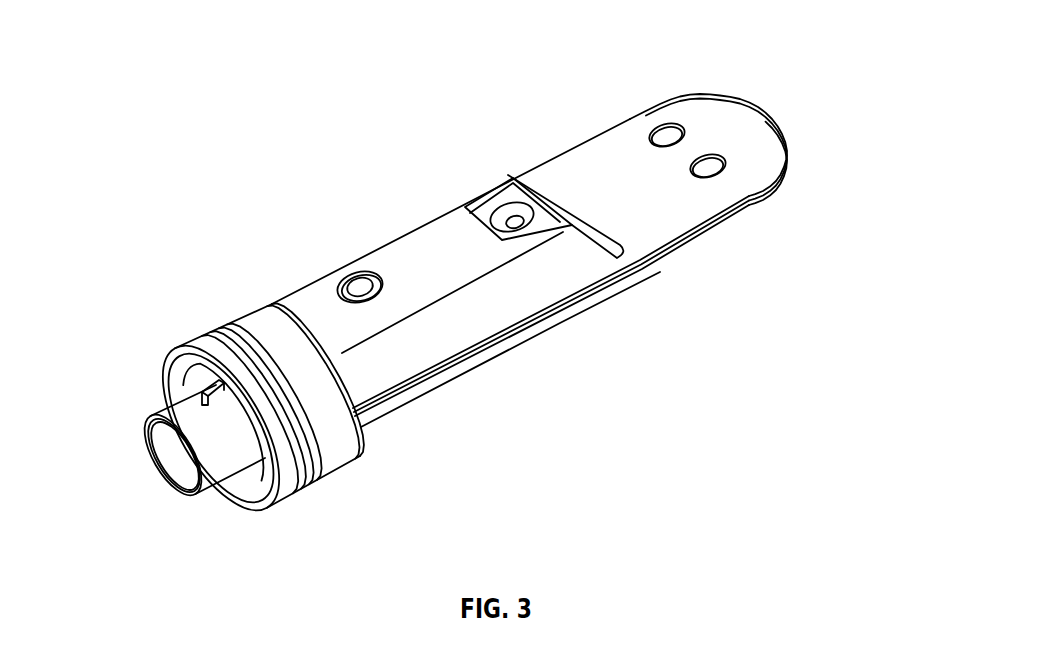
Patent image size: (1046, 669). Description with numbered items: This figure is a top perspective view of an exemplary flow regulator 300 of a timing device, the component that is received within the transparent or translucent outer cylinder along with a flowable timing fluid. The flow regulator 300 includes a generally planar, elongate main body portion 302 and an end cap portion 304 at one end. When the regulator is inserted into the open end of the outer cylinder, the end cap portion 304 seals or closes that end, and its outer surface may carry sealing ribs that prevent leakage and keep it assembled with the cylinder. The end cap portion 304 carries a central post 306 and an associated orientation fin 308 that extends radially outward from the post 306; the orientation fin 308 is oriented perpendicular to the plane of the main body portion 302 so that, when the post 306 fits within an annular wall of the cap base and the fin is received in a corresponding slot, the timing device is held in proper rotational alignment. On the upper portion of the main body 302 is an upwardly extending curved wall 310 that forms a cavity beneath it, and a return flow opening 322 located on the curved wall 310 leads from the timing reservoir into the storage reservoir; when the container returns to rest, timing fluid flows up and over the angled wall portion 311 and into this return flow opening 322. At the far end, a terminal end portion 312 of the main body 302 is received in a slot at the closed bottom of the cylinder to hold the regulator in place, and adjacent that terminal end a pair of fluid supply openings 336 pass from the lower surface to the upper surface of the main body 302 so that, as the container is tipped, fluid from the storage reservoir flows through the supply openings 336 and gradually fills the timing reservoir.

The flow regulator 300 is at (458, 278).
The main body portion 302 is at (617, 209).
The end cap portion 304 is at (340, 460).
The central post 306 is at (168, 457).
The orientation fin 308 is at (203, 392).
The curved wall 310 is at (437, 293).
The angled wall portion 311 is at (562, 207).
The terminal end portion 312 is at (772, 146).
The return flow opening 322 is at (517, 217).
The fluid supply openings 336 is at (677, 125).